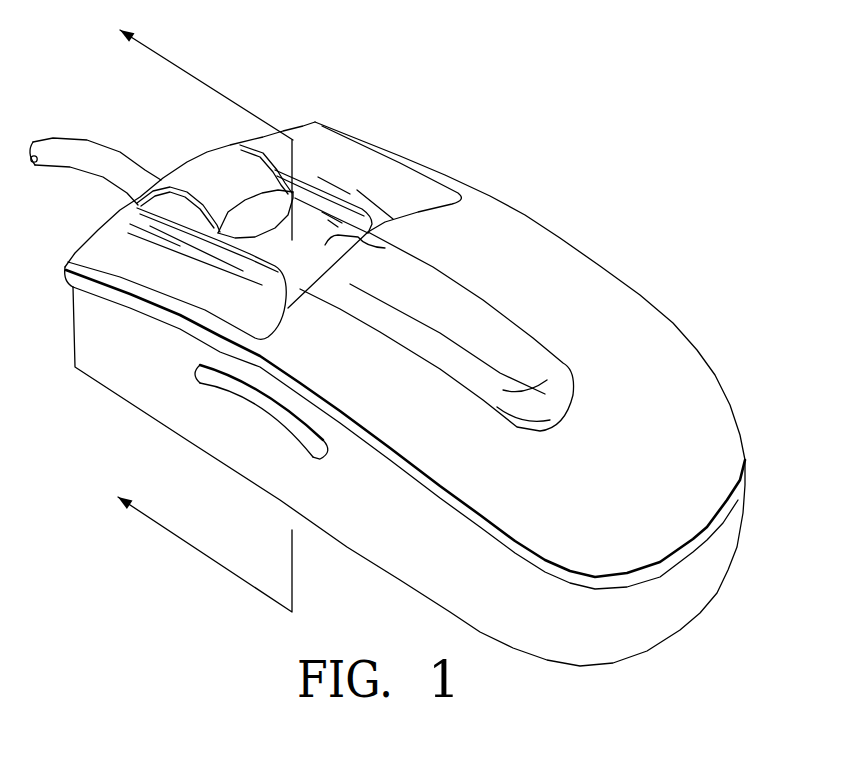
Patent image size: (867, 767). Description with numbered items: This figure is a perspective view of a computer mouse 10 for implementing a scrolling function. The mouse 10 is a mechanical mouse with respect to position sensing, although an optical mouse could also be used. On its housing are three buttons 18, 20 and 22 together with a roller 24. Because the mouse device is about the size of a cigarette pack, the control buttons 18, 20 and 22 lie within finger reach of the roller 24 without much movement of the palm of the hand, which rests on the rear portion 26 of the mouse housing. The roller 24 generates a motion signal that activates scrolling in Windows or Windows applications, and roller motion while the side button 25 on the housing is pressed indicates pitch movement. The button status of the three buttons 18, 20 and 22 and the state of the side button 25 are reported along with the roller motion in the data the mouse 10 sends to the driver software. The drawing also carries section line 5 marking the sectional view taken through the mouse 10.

The section line 5- 5 is at (193, 311).
The computer mouse 10 is at (634, 152).
The button 18 is at (103, 238).
The button 20 is at (385, 248).
The button 22 is at (317, 138).
The roller 24 is at (193, 162).
The side button 25 is at (197, 376).
The rear portion 26 is at (587, 500).